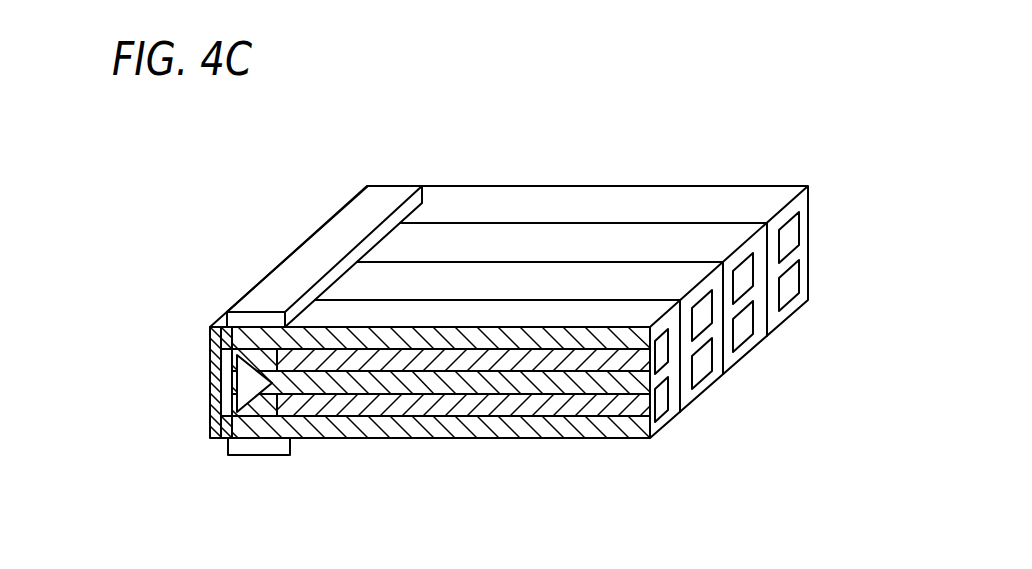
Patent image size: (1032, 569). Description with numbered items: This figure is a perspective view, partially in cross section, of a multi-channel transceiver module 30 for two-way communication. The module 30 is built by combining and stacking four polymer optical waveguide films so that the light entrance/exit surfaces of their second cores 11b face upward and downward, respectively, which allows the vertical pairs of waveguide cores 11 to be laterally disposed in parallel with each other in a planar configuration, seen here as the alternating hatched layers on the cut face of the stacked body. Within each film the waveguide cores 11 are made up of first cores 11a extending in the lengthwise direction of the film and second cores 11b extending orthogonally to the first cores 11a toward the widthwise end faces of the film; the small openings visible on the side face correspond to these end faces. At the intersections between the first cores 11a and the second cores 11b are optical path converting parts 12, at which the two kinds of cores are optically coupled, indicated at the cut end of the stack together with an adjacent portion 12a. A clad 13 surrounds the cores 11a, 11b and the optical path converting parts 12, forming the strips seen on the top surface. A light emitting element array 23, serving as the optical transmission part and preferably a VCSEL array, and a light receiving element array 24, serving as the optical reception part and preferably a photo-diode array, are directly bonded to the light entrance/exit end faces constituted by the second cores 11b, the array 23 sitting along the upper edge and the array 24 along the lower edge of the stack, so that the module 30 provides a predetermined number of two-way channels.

The multi-channel transceiver module 30 is at (688, 135).
The waveguide core 11 is at (529, 337).
The first core 11a is at (520, 365).
The second core 11b is at (305, 396).
The optical path converting part 12 is at (211, 372).
The extension portion of external electrode 12a is at (228, 314).
The clad 13 is at (608, 212).
The light emitting element array 23 is at (328, 243).
The light receiving element array 24 is at (263, 448).